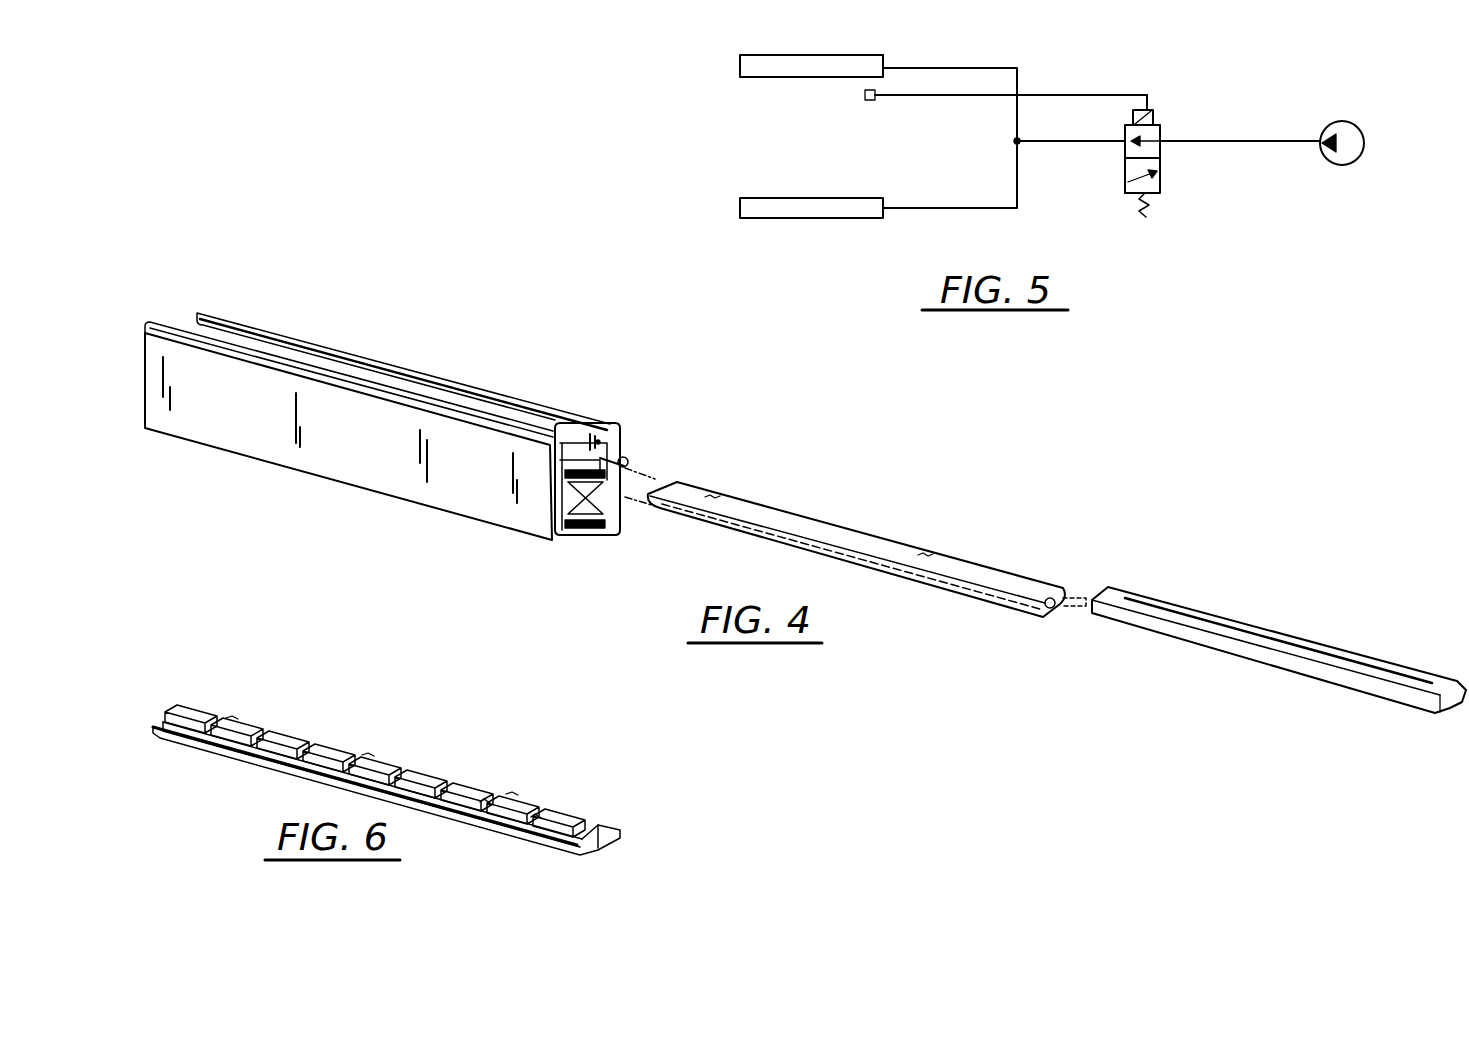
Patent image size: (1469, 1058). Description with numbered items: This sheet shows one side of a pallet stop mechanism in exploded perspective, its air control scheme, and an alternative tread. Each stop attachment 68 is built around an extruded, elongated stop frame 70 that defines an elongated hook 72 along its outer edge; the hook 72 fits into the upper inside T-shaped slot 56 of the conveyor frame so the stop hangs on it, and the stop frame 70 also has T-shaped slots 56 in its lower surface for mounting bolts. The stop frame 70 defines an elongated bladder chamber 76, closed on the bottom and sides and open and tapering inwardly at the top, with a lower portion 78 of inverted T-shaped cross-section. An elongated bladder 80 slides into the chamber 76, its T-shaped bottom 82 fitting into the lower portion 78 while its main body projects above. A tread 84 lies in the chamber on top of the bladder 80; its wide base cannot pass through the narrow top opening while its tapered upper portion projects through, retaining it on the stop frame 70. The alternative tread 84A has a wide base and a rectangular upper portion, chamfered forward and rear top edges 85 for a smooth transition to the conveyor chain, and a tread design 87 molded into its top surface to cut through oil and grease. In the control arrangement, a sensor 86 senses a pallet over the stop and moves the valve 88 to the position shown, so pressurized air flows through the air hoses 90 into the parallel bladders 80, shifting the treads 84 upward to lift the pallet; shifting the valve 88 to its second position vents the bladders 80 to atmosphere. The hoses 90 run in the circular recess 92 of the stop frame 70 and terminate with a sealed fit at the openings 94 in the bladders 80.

In FIG. 4, the T-shaped slot 56 is at (597, 532).
In FIG. 5, the stop attachment 68 is at (832, 222).
In FIG. 4, the stop attachment 68 is at (583, 423).
In FIG. 5, the stop frame 70 is at (820, 55).
In FIG. 4, the stop frame 70 is at (515, 500).
In FIG. 4, the hook 72 is at (620, 460).
In FIG. 4, the bladder chamber 76 is at (603, 442).
In FIG. 4, the lower portion 78 is at (628, 468).
In FIG. 4, the bladder 80 is at (962, 556).
In FIG. 4, the T-shaped bottom 82 is at (1047, 612).
In FIG. 4, the tread 84 is at (1287, 640).
In FIG. 6, the alternative tread 84A is at (420, 752).
In FIG. 6, the chamfered top edges 85 is at (163, 718).
In FIG. 5, the sensor 86 is at (868, 100).
In FIG. 6, the tread design 87 is at (535, 800).
In FIG. 5, the valve 88 is at (1160, 178).
In FIG. 5, the air hose 90 is at (968, 68).
In FIG. 4, the circular recess 92 is at (603, 522).
In FIG. 5, the opening 94 is at (886, 68).
In FIG. 4, the opening 94 is at (1068, 598).